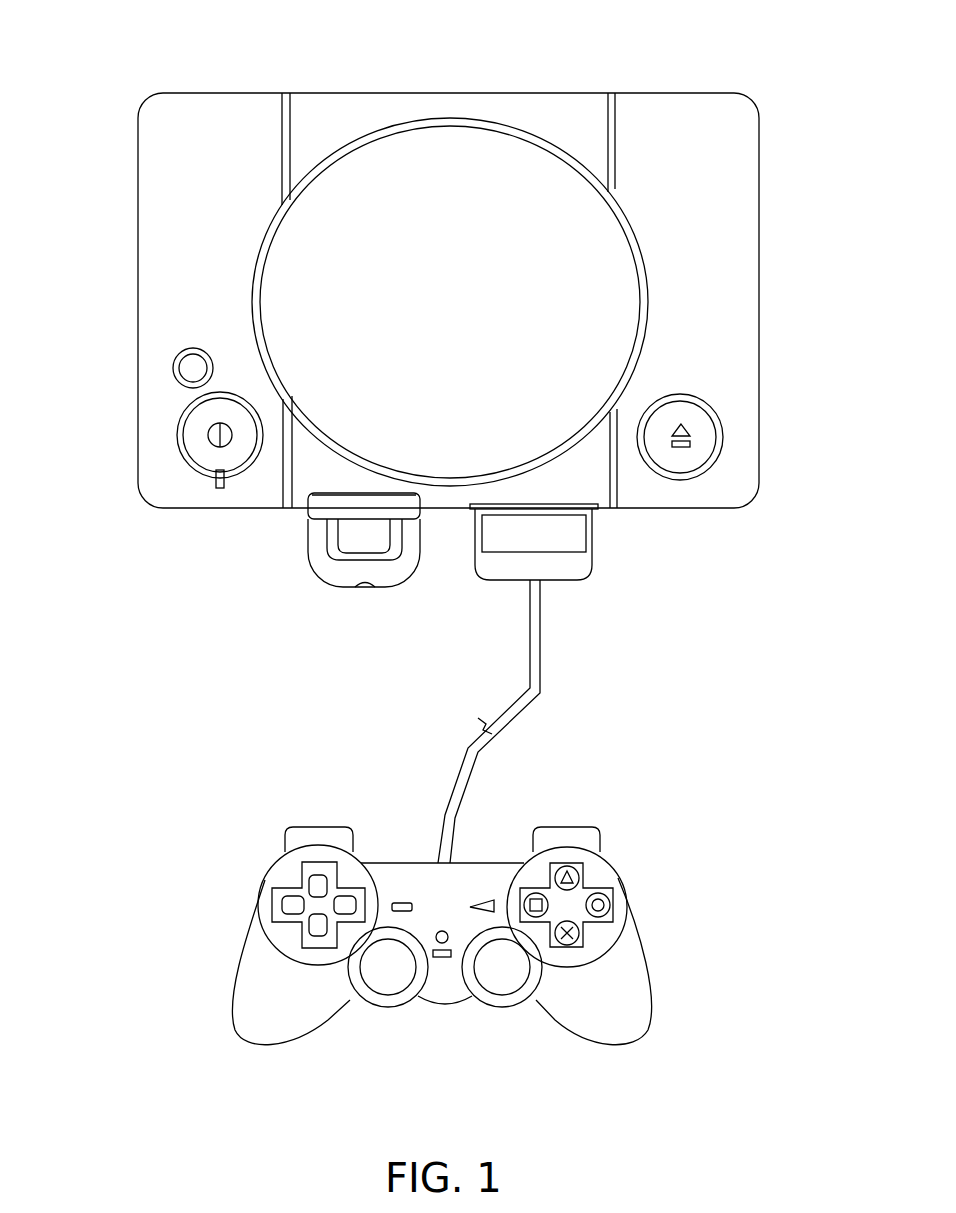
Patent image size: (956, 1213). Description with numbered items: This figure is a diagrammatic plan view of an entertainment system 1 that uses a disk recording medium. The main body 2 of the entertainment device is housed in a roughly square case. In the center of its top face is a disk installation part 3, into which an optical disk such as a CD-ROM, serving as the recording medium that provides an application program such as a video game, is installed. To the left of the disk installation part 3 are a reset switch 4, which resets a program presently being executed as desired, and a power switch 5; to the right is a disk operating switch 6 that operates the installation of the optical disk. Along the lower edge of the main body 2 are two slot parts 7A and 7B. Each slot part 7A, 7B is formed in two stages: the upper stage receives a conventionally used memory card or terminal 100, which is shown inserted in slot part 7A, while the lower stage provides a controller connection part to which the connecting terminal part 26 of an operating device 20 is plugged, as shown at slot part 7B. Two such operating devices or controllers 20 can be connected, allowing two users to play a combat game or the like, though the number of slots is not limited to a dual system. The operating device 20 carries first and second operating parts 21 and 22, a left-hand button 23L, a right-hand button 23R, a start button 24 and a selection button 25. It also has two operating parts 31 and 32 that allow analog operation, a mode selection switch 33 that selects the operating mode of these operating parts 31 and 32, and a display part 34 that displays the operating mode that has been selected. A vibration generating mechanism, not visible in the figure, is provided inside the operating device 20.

The entertainment system 1 is at (664, 82).
The main body 2 is at (700, 512).
The disk installation part 3 is at (483, 155).
The reset switch 4 is at (190, 361).
The power switch 5 is at (192, 434).
The disk operating switch 6 is at (706, 430).
The slot part 7A is at (308, 510).
The slot part 7B is at (597, 510).
The memory card 100 is at (321, 585).
The operating device 20 is at (672, 962).
The connecting terminal part 26 is at (582, 582).
The first operating part 21 is at (283, 879).
The second operating part 22 is at (598, 877).
The left-hand button 23L is at (312, 818).
The right-hand button 23R is at (617, 830).
The start button 24 is at (490, 900).
The selection button 25 is at (402, 900).
The operating part 31 is at (381, 968).
The operating part 32 is at (496, 982).
The mode selection switch 33 is at (438, 943).
The display part 34 is at (442, 958).